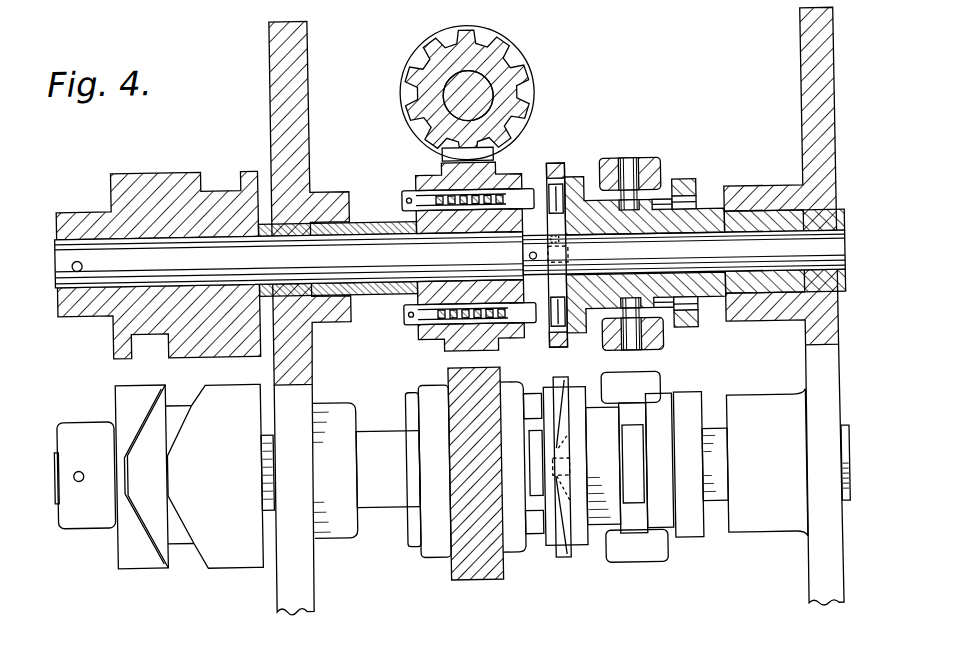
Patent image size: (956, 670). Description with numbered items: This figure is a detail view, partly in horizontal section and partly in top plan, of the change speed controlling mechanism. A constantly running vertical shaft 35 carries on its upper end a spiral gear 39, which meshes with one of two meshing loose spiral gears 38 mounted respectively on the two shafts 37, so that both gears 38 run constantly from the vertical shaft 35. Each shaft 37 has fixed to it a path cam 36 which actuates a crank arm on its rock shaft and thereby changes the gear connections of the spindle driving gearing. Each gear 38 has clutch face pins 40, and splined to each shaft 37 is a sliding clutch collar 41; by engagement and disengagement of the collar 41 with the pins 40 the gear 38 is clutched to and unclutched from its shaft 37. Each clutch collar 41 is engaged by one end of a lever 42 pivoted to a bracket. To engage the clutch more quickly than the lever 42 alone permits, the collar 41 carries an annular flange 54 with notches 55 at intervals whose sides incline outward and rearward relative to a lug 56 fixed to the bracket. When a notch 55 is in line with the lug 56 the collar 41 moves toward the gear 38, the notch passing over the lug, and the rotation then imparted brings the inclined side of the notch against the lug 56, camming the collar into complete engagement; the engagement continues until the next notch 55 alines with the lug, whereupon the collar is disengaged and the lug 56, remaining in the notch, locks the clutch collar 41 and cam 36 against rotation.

The vertical shaft 35 is at (523, 50).
The path cam 36 is at (238, 357).
The shaft 37 is at (44, 533).
The spiral gear 38 is at (418, 172).
The spiral gear 39 is at (538, 99).
The clutch face pins 40 is at (532, 188).
The sliding clutch collar 41 is at (590, 200).
The lever 42 is at (660, 160).
The annular flange 54 is at (558, 165).
The notches 55 is at (568, 462).
The lug 56 is at (577, 260).